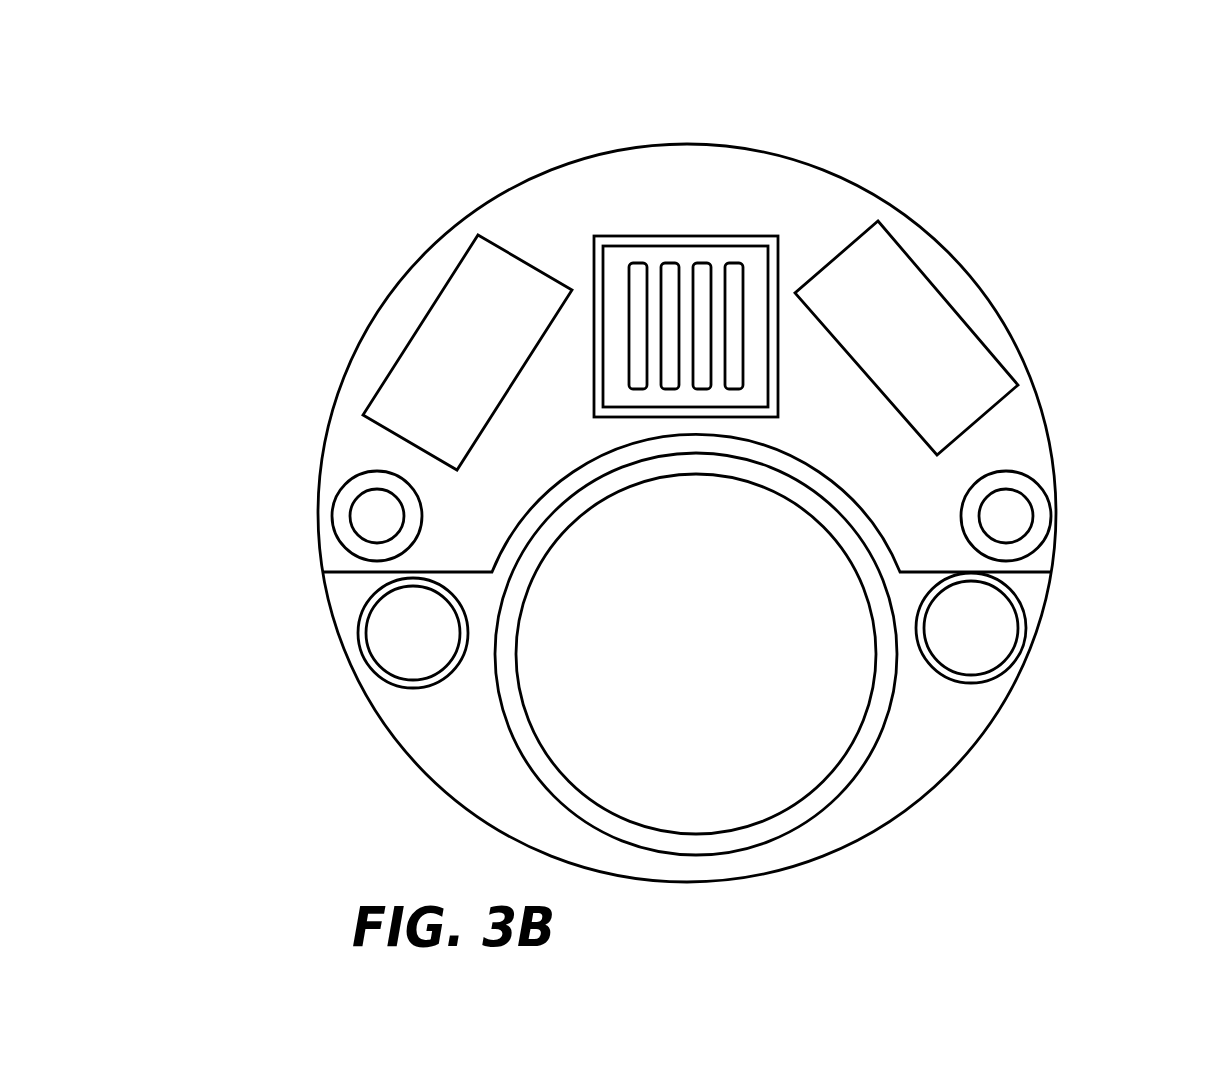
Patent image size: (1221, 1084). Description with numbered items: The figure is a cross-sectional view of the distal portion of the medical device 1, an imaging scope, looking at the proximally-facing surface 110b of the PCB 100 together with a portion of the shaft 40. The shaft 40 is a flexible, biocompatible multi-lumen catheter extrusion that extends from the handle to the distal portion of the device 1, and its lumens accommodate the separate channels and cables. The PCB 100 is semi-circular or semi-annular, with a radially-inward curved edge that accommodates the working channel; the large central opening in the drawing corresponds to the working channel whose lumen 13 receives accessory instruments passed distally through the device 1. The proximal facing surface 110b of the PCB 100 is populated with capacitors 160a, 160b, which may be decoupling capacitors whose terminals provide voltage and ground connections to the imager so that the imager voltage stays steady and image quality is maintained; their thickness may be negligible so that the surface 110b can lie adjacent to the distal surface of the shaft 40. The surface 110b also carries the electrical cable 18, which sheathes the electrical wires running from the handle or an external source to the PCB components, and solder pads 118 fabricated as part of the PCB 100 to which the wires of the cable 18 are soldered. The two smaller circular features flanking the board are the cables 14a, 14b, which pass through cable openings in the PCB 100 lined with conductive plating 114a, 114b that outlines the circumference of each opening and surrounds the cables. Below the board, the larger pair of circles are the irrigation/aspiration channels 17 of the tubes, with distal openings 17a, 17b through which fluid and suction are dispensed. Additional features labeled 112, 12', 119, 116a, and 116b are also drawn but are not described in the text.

The medical device 1 is at (292, 246).
The PCB 100 is at (838, 205).
The shaft 40 is at (470, 742).
The outer ring of central opening 112 is at (697, 843).
The inner ring of central opening 12' is at (715, 705).
The lumen 13 is at (803, 762).
The electrical cable 18 is at (667, 188).
The solder pads 118 is at (638, 277).
The grille frame 119 is at (597, 290).
The capacitor 160a is at (435, 303).
The capacitor 160b is at (960, 313).
The proximal facing surface 110b is at (903, 233).
The cable 14a is at (370, 512).
The conductive plating 114a is at (340, 543).
The cable 14b is at (1012, 510).
The conductive plating 114b is at (1050, 530).
The distal opening 17a is at (398, 611).
The distal opening 17b is at (975, 605).
The channels 17 is at (385, 673).
The first boss 116a is at (407, 686).
The second boss 116b is at (977, 683).